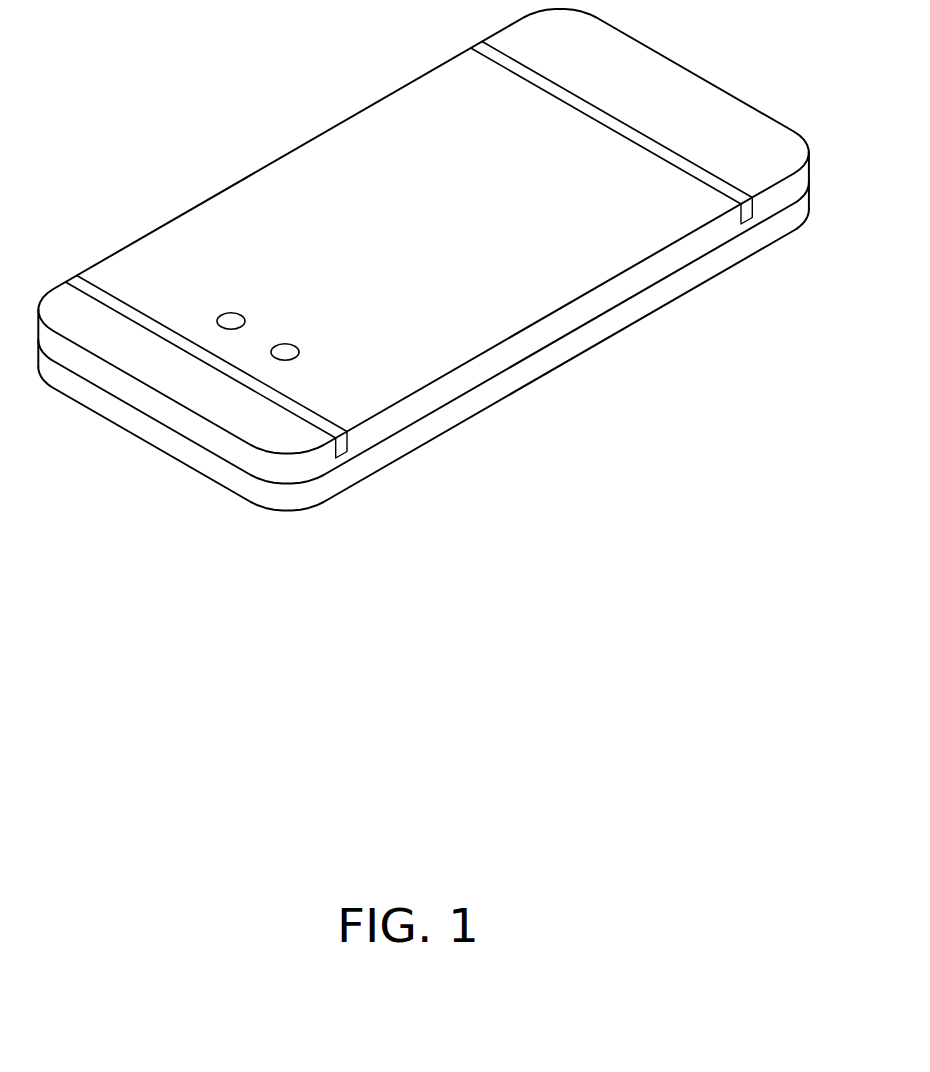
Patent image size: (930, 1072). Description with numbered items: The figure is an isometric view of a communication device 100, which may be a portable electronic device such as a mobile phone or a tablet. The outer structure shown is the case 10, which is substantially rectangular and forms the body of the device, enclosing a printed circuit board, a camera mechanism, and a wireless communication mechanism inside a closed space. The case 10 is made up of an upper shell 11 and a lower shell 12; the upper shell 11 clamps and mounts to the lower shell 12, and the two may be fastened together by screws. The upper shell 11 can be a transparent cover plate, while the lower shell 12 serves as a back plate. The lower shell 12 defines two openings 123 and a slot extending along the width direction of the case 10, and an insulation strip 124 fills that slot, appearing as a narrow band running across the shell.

The communication device 100 is at (423, 270).
The case 10 is at (423, 271).
The upper shell 11 is at (582, 463).
The lower shell 12 is at (423, 271).
The opening 123 is at (231, 320).
The insulation strip 124 is at (348, 448).